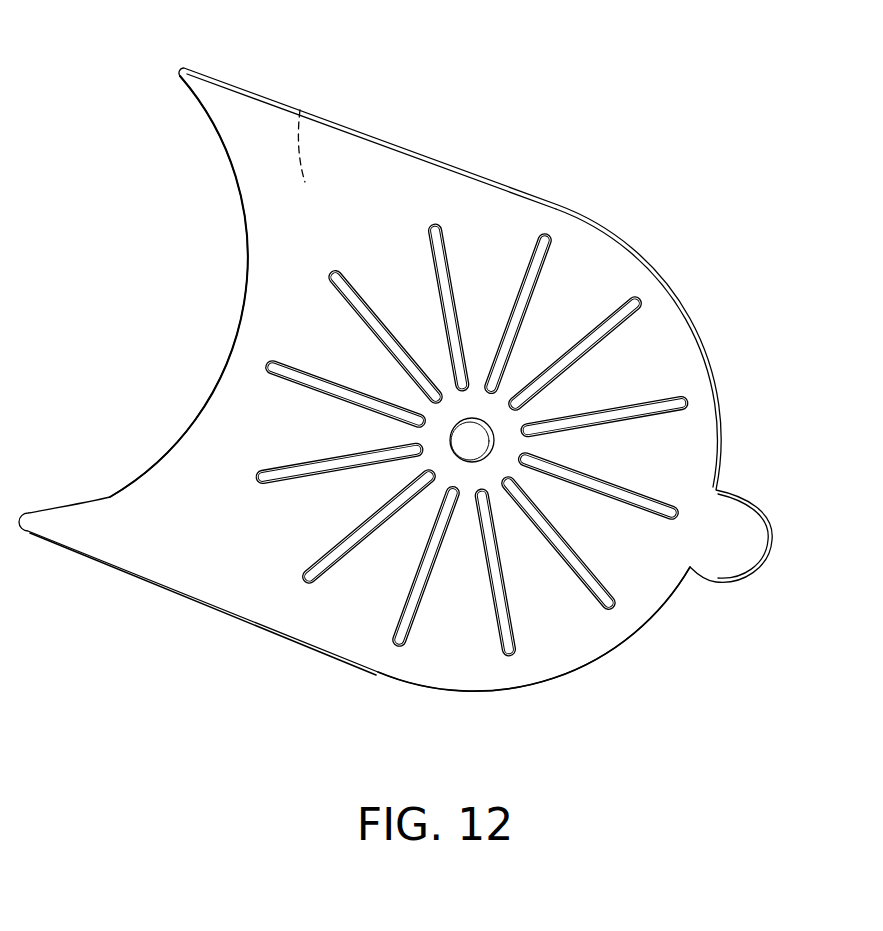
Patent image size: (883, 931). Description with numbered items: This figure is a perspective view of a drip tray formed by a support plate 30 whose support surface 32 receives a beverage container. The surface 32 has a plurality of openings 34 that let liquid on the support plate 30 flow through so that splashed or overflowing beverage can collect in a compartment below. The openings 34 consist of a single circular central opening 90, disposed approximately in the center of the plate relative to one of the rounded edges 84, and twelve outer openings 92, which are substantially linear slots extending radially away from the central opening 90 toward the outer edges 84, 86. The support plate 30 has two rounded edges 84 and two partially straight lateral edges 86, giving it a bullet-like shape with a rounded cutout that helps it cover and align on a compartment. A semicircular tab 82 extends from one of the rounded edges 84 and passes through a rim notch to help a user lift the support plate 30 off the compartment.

The support plate 30 is at (300, 110).
The support surface 32 is at (360, 165).
The openings 34 is at (507, 632).
The tab 82 is at (753, 536).
The rounded edges 84 is at (238, 311).
The lateral edges 86 is at (437, 160).
The central opening 90 is at (494, 431).
The outer openings 92 is at (548, 255).